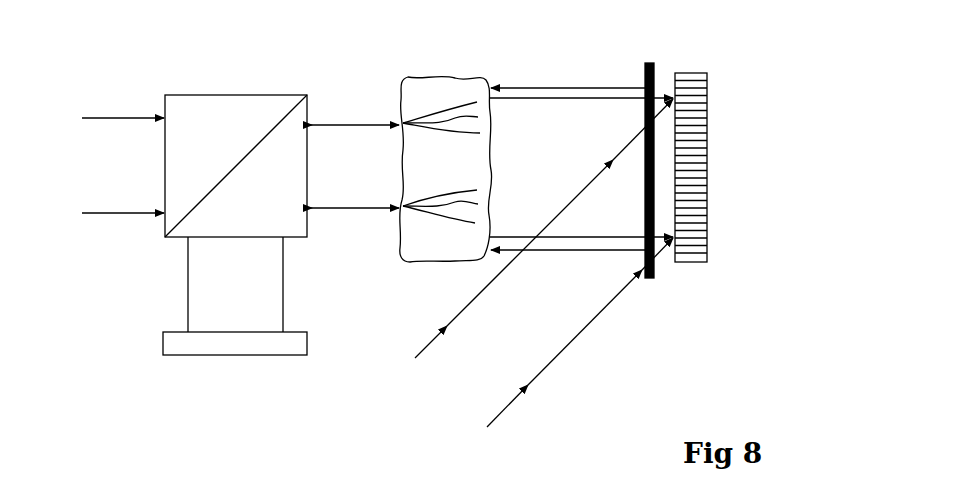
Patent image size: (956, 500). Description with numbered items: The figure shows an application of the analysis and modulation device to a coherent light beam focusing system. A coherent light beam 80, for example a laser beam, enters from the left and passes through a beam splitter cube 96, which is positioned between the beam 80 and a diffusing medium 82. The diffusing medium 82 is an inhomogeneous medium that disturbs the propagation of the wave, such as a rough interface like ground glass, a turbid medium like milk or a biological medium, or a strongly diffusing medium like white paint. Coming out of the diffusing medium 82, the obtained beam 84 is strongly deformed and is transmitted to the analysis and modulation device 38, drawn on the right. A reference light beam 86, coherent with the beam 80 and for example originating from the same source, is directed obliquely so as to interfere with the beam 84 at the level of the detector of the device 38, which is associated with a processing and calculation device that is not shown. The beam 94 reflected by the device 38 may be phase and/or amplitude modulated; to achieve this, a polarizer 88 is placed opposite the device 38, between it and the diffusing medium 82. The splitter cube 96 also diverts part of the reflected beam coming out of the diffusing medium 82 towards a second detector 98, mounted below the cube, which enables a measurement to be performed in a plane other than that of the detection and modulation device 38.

The coherent light beam 80 is at (92, 118).
The beam splitter cube 96 is at (240, 94).
The second detector 98 is at (239, 355).
The diffusing medium 82 is at (453, 77).
The reflected beam 94 is at (549, 87).
The obtained beam 84 is at (608, 97).
The reference light beam 86 is at (583, 331).
The polarizer 88 is at (655, 80).
The analysis and modulation device 38 is at (708, 132).